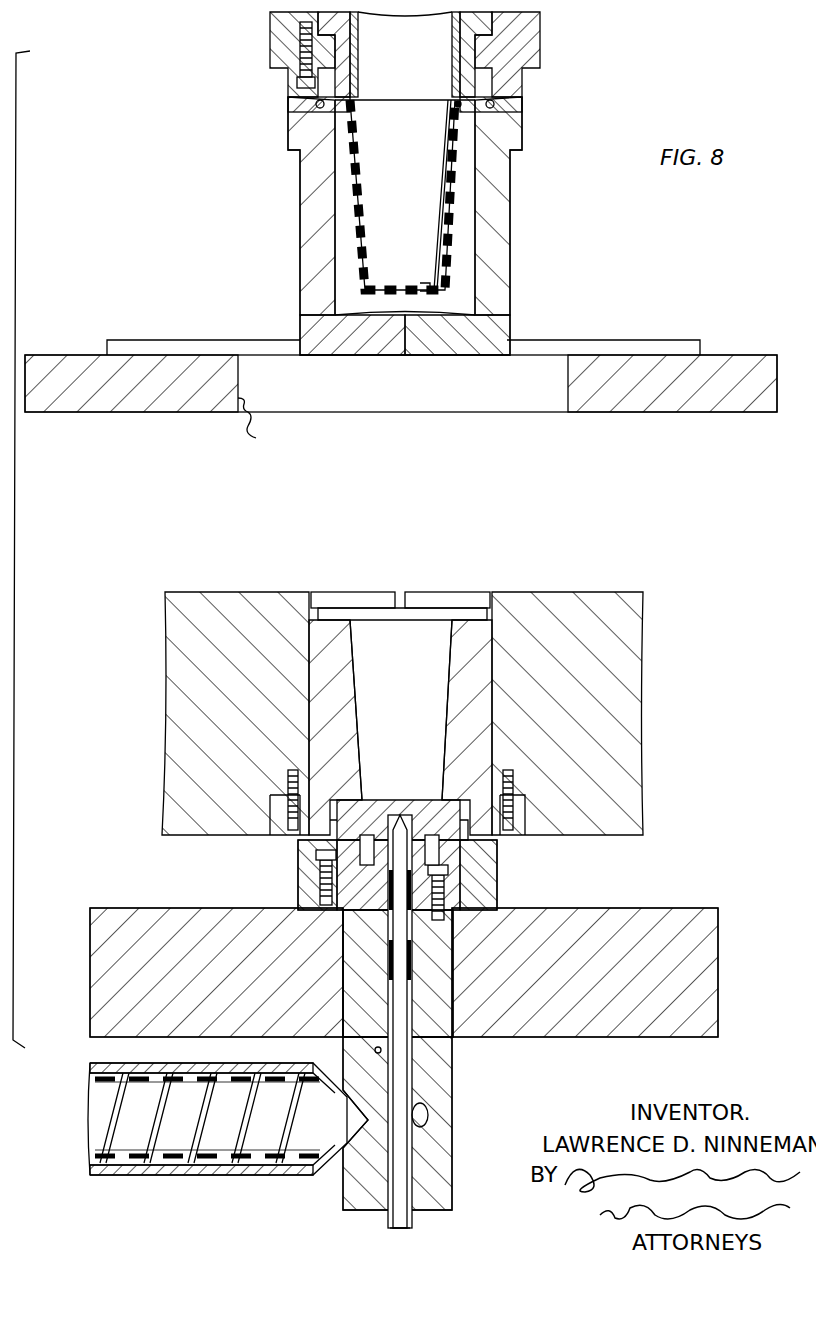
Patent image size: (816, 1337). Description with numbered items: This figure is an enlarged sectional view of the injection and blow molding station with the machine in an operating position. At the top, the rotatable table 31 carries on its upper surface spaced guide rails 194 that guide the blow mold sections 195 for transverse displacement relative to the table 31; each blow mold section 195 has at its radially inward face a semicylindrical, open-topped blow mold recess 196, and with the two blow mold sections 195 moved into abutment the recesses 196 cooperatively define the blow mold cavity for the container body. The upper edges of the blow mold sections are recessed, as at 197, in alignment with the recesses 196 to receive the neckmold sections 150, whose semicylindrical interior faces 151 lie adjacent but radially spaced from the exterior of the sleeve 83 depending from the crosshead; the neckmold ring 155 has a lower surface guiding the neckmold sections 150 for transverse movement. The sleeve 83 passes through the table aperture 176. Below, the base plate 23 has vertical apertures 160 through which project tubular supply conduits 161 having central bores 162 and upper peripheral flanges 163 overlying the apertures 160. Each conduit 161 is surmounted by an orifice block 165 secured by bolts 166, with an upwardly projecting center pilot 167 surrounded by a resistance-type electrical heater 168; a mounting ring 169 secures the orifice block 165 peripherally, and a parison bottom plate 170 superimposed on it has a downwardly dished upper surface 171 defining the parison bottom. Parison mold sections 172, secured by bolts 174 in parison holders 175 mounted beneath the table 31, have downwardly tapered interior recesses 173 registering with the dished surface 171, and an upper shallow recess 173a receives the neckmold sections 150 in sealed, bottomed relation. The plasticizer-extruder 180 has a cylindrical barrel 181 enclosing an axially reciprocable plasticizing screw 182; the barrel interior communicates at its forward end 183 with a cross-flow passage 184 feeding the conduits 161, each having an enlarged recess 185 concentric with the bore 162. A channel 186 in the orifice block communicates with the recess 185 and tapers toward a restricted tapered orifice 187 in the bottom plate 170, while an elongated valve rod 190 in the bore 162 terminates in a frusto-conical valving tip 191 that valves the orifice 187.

The table 31 is at (700, 398).
The table aperture 176 is at (266, 425).
The guide rail 194 is at (590, 348).
The blow mold section 195 is at (300, 298).
The blow mold recess 196 is at (335, 205).
The sleeve 83 is at (410, 221).
The valving tip 191 is at (432, 290).
The semicylindrical interior face 151 is at (455, 115).
The recess 197 is at (318, 103).
The neckmold section 150 is at (522, 80).
The neckmold ring 155 is at (452, 80).
The parison holder 175 is at (172, 712).
The interior recess 173 is at (412, 682).
The parison mold section 172 is at (423, 565).
The upper shallow recess 173a is at (492, 615).
The bolt 174 is at (290, 778).
The tapered orifice 187 is at (388, 820).
The parison bottom plate 170 is at (497, 852).
The electrical heater 168 is at (325, 862).
The center pilot 167 is at (362, 845).
The mounting ring 169 is at (305, 900).
The channel 186 is at (380, 860).
The upper peripheral flange 163 is at (445, 898).
The orifice block 165 is at (440, 882).
The bolt 166 is at (440, 915).
The base plate 23 is at (705, 1000).
The vertical aperture 160 is at (450, 1040).
The supply conduit 161 is at (455, 1166).
The valve rod 190 is at (410, 1185).
The dished recess 171 is at (440, 790).
The cross-flow passage 184 is at (428, 1116).
The enlarged recess 185 is at (375, 1050).
The barrel 181 is at (110, 1068).
The plasticizing screw 182 is at (230, 1128).
The plasticizer-extruder 180 is at (160, 1180).
The forward end of barrel 183 is at (352, 1140).
The central bore 162 is at (392, 1215).